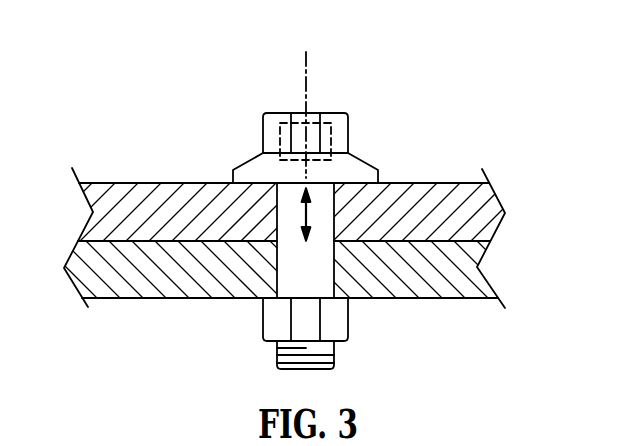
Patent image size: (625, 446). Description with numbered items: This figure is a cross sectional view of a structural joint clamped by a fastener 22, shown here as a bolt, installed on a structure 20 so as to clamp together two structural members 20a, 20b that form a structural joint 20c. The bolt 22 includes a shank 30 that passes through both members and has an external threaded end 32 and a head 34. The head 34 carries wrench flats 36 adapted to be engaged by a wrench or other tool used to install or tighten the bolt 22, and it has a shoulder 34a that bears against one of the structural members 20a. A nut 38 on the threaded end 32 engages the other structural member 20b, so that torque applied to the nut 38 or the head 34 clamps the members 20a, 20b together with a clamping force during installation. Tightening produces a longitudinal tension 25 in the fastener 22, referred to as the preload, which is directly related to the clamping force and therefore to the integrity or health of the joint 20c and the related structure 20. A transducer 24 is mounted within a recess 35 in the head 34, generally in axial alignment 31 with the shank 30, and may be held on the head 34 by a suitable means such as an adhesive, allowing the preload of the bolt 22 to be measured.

The structure 20 is at (513, 183).
The structural member 20a is at (143, 213).
The structural member 20b is at (178, 272).
The structural joint 20c is at (130, 258).
The fastener 22 is at (420, 130).
The transducer 24 is at (280, 140).
The longitudinal tension 25 is at (306, 216).
The shank 30 is at (327, 217).
The axial alignment 31 is at (305, 72).
The external threaded end 32 is at (333, 358).
The head 34 is at (272, 90).
The shoulder 34a is at (370, 198).
The recess 35 is at (321, 90).
The wrench flats 36 is at (342, 120).
The nut 38 is at (336, 322).